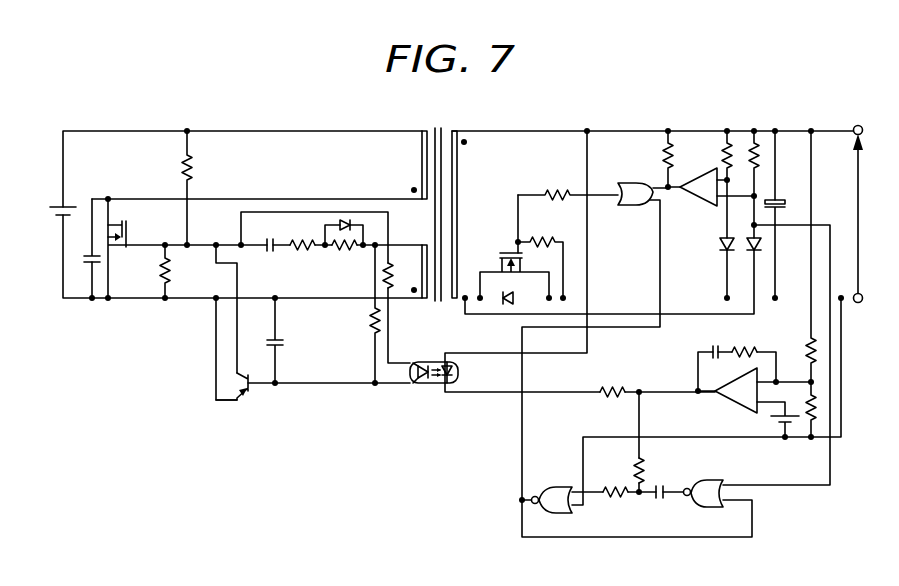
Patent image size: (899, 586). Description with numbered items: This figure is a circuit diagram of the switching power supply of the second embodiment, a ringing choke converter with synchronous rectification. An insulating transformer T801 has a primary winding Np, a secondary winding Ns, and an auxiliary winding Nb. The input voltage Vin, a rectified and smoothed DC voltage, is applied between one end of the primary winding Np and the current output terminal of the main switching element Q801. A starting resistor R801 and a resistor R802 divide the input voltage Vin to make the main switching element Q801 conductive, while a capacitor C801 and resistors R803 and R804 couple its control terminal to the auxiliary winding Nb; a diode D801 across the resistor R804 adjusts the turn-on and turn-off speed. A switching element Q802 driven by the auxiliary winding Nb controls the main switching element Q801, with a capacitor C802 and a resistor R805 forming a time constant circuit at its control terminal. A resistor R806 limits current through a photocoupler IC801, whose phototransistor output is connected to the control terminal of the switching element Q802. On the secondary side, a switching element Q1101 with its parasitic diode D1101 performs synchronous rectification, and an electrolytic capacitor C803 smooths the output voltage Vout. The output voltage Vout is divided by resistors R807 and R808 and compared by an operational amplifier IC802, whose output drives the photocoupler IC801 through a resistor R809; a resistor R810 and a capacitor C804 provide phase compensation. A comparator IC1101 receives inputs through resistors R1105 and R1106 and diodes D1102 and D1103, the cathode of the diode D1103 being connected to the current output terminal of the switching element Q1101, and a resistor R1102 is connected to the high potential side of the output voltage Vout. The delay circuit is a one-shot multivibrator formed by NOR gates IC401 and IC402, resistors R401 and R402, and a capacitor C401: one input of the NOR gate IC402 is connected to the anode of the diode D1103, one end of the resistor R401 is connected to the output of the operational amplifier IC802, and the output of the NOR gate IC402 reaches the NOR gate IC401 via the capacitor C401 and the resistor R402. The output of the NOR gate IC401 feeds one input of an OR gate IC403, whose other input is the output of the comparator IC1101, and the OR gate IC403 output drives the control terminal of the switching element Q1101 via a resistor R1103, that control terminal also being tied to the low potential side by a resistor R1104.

The input voltage Vin is at (54, 198).
The output voltage Vout is at (840, 214).
The capacitor C804 is at (78, 264).
The starting resistor R801 is at (164, 188).
The main switching element Q801 is at (139, 227).
The resistor R802 is at (188, 271).
The capacitor C801 is at (267, 258).
The resistor R803 is at (298, 233).
The resistor R804 is at (345, 258).
The diode D801 is at (346, 219).
The insulating transformer T801 is at (438, 203).
The primary winding Np is at (406, 165).
The auxiliary winding Nb is at (406, 268).
The secondary winding Ns is at (472, 156).
The capacitor C802 is at (297, 340).
The resistor R805 is at (350, 314).
The resistor R806 is at (398, 287).
The switching element Q802 is at (251, 395).
The photocoupler IC801 is at (422, 389).
The switching element Q1101 is at (504, 264).
The parasitic diode D1101 is at (508, 304).
The resistor R1103 is at (568, 181).
The resistor R1104 is at (547, 253).
The OR gate IC403 is at (627, 210).
The resistor R1102 is at (640, 159).
The comparator IC1101 is at (692, 200).
The resistor R1105 is at (706, 170).
The resistor R1106 is at (771, 170).
The diode D1102 is at (701, 265).
The diode D1103 is at (748, 251).
The electrolytic capacitor C803 is at (785, 201).
The resistor R807 is at (818, 352).
The resistor R808 is at (808, 418).
The operational amplifier IC802 is at (718, 398).
The resistor R810 is at (755, 340).
The resistor R809 is at (611, 380).
The resistor R401 is at (617, 470).
The resistor R402 is at (611, 507).
The capacitor C401 is at (666, 506).
The NOR gate IC401 is at (549, 487).
The NOR gate IC402 is at (707, 481).